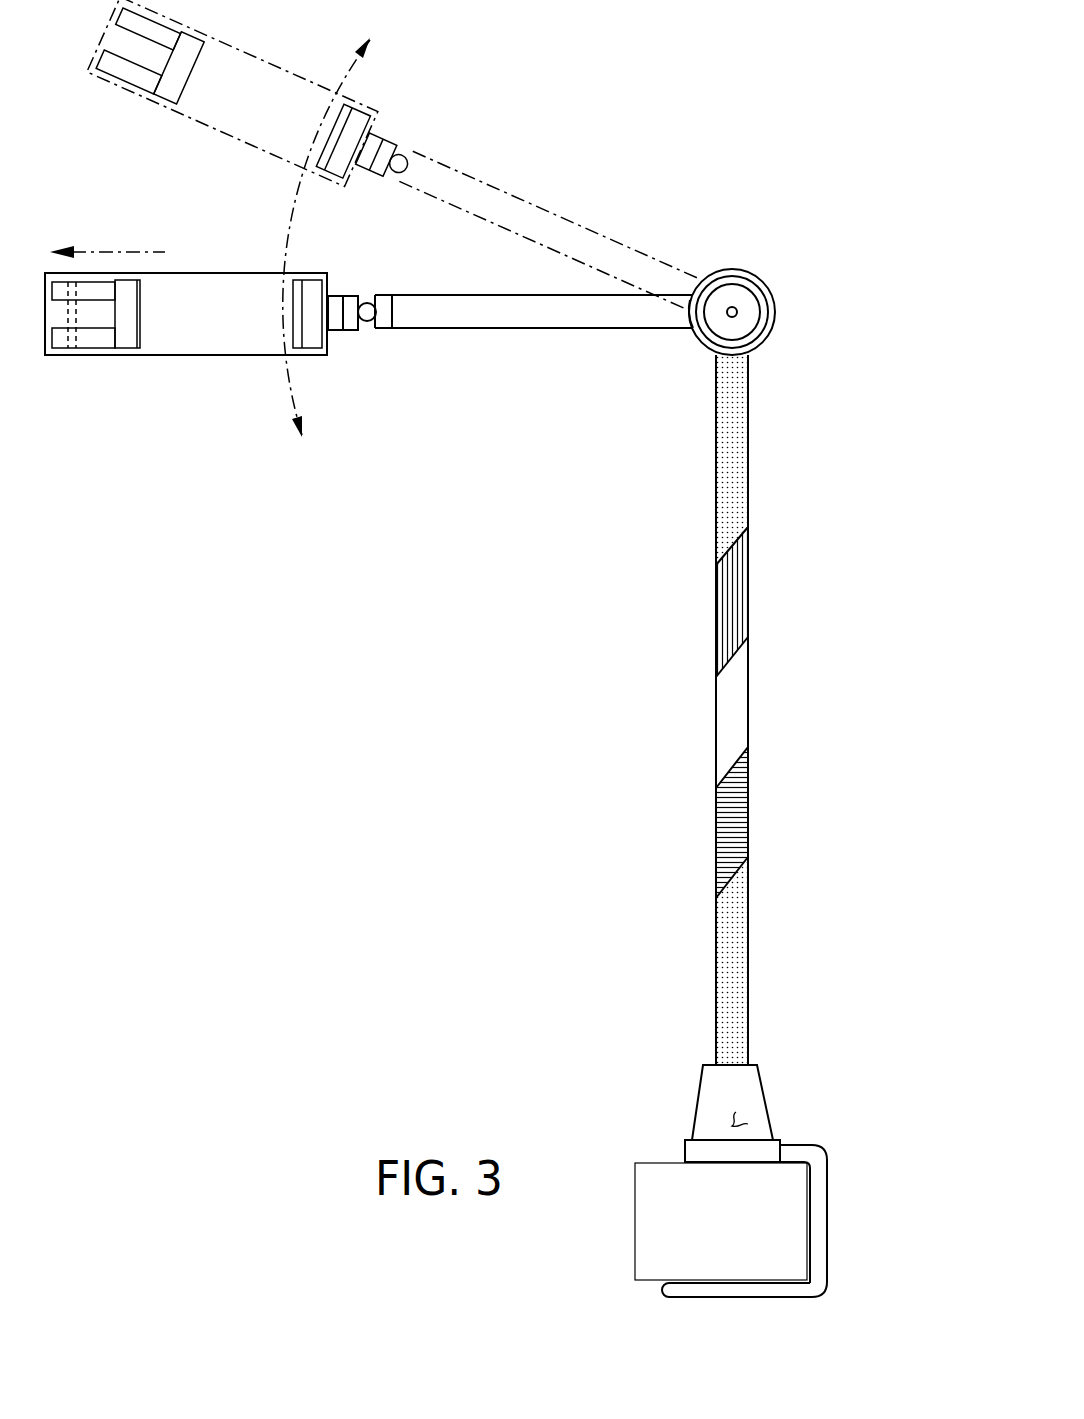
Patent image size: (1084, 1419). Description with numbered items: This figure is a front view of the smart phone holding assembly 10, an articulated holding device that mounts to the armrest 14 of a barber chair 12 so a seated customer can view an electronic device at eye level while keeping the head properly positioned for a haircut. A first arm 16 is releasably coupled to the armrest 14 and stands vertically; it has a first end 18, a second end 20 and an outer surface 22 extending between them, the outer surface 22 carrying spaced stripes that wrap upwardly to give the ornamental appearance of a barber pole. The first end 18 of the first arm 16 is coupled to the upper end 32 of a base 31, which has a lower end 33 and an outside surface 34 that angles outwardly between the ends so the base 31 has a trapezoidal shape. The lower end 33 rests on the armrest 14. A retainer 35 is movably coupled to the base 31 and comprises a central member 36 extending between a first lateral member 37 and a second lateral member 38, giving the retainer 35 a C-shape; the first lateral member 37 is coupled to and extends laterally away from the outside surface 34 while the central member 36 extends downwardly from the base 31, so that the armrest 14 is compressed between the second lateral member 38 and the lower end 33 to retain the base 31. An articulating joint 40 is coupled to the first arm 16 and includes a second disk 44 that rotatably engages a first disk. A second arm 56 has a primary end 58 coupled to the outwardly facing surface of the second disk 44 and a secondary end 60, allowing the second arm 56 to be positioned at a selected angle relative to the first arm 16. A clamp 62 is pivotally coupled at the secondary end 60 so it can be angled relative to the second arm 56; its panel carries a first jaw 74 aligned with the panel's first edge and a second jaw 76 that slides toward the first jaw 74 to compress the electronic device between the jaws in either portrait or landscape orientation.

The smart phone holding assembly 10 is at (794, 148).
The barber chair 12 is at (610, 1158).
The armrest 14 is at (654, 1162).
The first arm 16 is at (749, 486).
The first end 18 is at (755, 1095).
The second end 20 is at (733, 354).
The outer surface 22 is at (734, 468).
The base 31 is at (757, 1065).
The upper end 32 is at (716, 1065).
The lower end 33 is at (732, 1163).
The outside surface 34 is at (772, 1125).
The retainer 35 is at (822, 1296).
The central member 36 is at (828, 1220).
The first lateral member 37 is at (800, 1140).
The second lateral member 38 is at (743, 1299).
The articulating joint 40 is at (795, 316).
The second disk 44 is at (720, 271).
The second arm 56 is at (530, 295).
The primary end 58 is at (696, 330).
The secondary end 60 is at (372, 322).
The clamp 62 is at (228, 266).
The first jaw 74 is at (305, 345).
The second jaw 76 is at (137, 342).